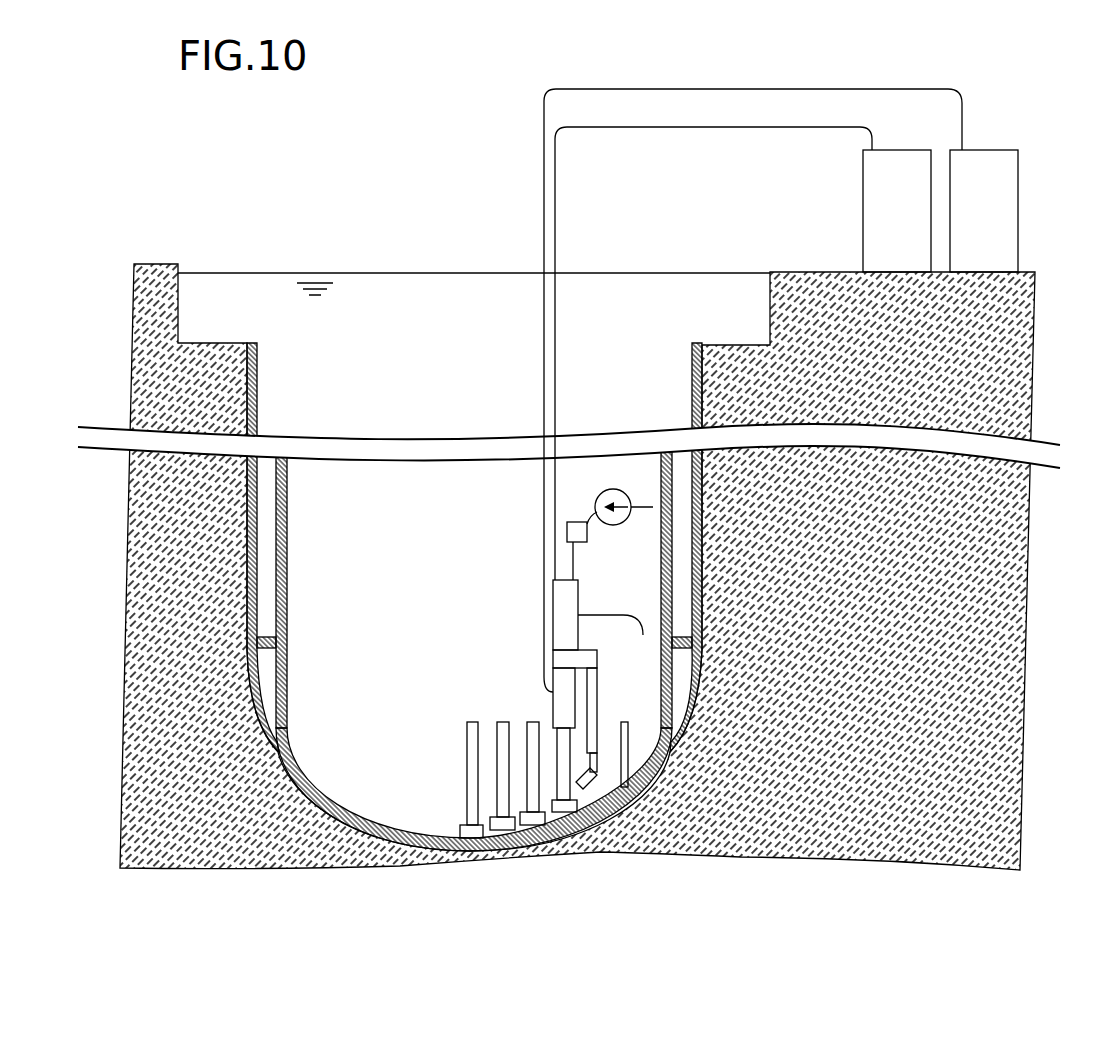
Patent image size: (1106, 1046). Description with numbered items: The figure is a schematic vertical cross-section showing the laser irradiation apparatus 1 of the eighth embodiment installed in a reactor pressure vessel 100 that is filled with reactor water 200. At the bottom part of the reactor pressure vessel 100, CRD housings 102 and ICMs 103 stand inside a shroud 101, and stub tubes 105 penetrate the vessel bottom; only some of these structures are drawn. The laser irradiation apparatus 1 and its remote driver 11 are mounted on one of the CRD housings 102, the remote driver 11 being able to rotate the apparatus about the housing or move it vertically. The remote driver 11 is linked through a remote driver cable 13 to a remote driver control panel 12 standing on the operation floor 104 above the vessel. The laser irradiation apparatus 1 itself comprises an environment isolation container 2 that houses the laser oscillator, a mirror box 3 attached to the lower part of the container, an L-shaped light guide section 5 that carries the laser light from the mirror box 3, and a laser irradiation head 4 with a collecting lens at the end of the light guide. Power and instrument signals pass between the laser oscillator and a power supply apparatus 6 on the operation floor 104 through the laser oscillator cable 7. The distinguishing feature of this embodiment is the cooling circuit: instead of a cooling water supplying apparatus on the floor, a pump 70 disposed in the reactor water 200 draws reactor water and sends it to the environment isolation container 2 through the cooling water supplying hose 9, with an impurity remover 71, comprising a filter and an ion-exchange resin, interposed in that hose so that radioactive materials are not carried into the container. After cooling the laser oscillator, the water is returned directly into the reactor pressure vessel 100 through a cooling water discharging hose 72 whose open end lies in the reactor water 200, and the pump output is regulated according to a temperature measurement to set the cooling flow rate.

The laser irradiation apparatus 1 is at (540, 674).
The environment isolation container 2 is at (571, 611).
The mirror box 3 is at (574, 652).
The laser irradiation head 4 is at (600, 765).
The L-shaped light guide section 5 is at (598, 676).
The power supply apparatus 6 is at (912, 162).
The laser oscillator cable 7 is at (708, 127).
The cooling water supplying hose 9 is at (575, 565).
The remote driver 11 is at (553, 706).
The remote driver control panel 12 is at (983, 163).
The remote driver cable 13 is at (544, 137).
The pump 70 is at (614, 489).
The impurity remover 71 is at (571, 522).
The cooling water discharging hose 72 is at (613, 615).
The reactor pressure vessel 100 is at (258, 413).
The shroud 101 is at (288, 590).
The CRD housing 102 is at (472, 757).
The ICM 103 is at (624, 720).
The operation floor 104 is at (160, 264).
The stub tube 105 is at (458, 825).
The reactor water 200 is at (398, 300).